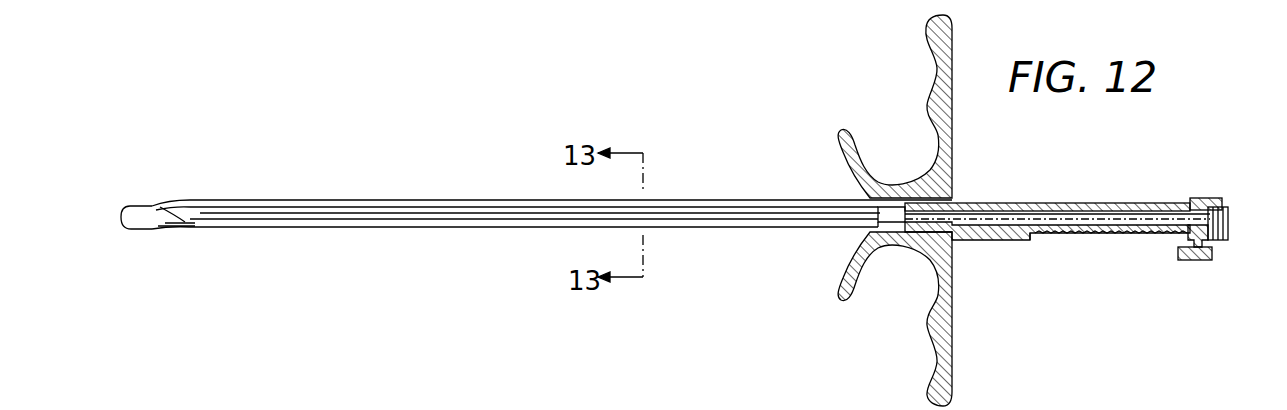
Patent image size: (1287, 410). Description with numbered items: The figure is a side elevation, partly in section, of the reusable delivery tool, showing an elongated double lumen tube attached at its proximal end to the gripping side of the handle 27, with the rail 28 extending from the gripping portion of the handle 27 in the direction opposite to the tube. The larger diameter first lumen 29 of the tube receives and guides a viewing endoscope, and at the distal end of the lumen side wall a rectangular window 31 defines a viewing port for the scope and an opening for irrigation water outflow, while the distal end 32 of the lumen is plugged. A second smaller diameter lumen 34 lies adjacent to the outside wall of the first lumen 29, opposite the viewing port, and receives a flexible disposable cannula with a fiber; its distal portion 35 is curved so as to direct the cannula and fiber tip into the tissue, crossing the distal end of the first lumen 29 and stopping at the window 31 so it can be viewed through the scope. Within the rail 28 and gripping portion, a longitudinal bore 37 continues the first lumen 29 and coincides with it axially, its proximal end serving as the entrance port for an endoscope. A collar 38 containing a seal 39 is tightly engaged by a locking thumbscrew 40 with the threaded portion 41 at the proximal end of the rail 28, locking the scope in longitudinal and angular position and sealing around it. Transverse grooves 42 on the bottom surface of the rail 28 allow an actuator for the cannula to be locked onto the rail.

The handle 27 is at (955, 163).
The rail 28 is at (1022, 203).
The first lumen 29 is at (390, 217).
The window 31 is at (172, 230).
The distal end 32 is at (118, 216).
The second lumen 34 is at (432, 200).
The distal portion 35 is at (186, 200).
The longitudinal bore 37 is at (1024, 241).
The collar 38 is at (1207, 198).
The seal 39 is at (1224, 207).
The locking thumbscrew 40 is at (1186, 262).
The threaded portion 41 is at (1212, 238).
The transverse grooves 42 is at (1098, 236).